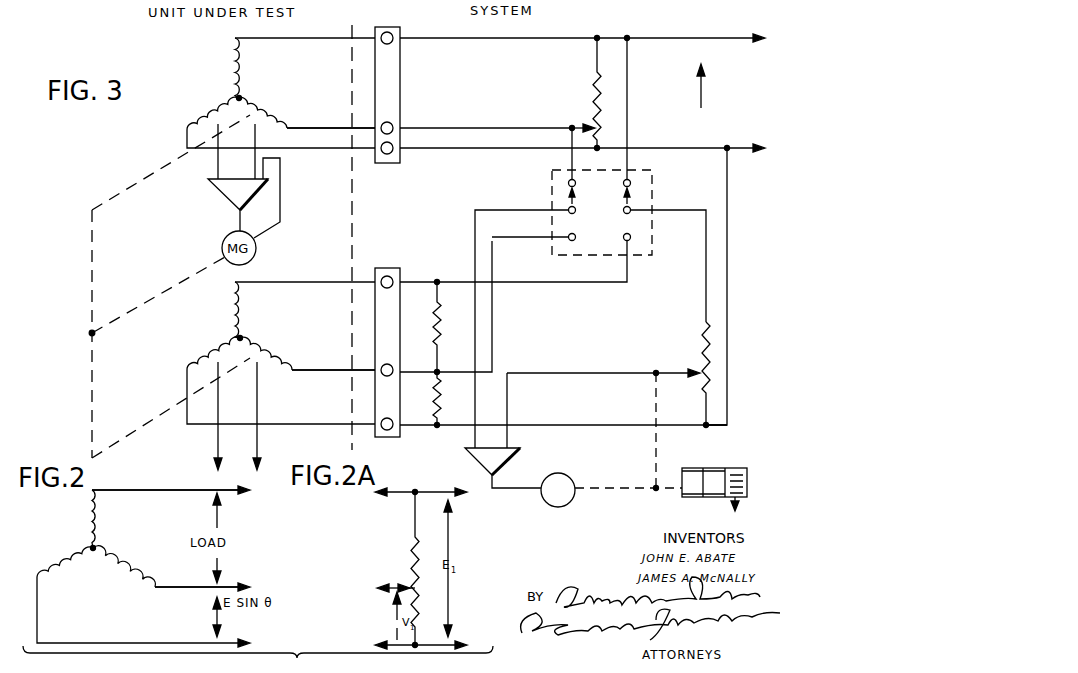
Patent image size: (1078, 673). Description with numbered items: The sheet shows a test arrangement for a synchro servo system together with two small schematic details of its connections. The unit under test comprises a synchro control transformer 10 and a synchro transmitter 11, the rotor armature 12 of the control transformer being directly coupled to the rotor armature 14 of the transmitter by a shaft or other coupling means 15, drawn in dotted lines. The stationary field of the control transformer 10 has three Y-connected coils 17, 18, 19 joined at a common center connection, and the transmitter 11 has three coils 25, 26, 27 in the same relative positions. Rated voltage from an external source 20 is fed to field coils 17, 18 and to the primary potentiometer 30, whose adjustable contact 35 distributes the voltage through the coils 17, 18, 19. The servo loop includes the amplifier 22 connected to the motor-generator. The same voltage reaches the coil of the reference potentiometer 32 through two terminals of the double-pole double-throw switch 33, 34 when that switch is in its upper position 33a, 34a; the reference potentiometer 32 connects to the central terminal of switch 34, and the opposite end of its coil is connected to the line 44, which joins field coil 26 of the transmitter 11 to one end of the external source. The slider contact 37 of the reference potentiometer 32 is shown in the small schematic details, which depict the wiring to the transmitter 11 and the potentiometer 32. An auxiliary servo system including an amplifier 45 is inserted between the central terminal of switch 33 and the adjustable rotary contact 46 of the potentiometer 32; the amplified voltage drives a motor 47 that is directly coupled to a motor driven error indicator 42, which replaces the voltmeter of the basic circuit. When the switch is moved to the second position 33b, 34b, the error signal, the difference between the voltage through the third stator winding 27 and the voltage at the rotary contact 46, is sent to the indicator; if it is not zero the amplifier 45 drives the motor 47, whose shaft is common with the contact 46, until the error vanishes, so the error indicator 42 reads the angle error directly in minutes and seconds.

In FIG. 3, the synchro control transformer 10 is at (248, 93).
In FIG. 3, the synchro transmitter 11 is at (249, 336).
In FIG. 2, the synchro transmitter 11 is at (103, 542).
In FIG. 3, the rotor armature of the control transformer 12 is at (252, 118).
In FIG. 3, the rotor armature of the synchro transmitter 14 is at (253, 364).
In FIG. 3, the coupling means 15 is at (93, 272).
In FIG. 3, the field coil 17 is at (229, 63).
In FIG. 3, the field coil 18 is at (218, 107).
In FIG. 3, the field coil 19 is at (265, 108).
In FIG. 3, the external source 20 is at (701, 104).
In FIG. 3, the amplifier 22 is at (223, 195).
In FIG. 3, the field coil of the synchro transmitter 25 is at (238, 303).
In FIG. 2, the field coil of the synchro transmitter 25 is at (86, 514).
In FIG. 3, the field coil of the synchro transmitter 26 is at (209, 347).
In FIG. 2, the field coil of the synchro transmitter 26 is at (73, 555).
In FIG. 3, the third stator winding of the synchro transmitter 27 is at (283, 353).
In FIG. 2, the third stator winding of the synchro transmitter 27 is at (134, 564).
In FIG. 3, the primary potentiometer 30 is at (587, 84).
In FIG. 3, the reference potentiometer 32 is at (712, 336).
In FIG. 2A, the reference potentiometer 32 is at (405, 548).
In FIG. 3, the switch 33 is at (556, 208).
In FIG. 3, the switch position 33a is at (568, 184).
In FIG. 3, the second switch position 33b is at (569, 240).
In FIG. 3, the switch 34 is at (639, 207).
In FIG. 3, the switch position 34a is at (634, 182).
In FIG. 3, the second switch position 34b is at (624, 242).
In FIG. 3, the potentiometer tap 35 is at (580, 122).
In FIG. 2, the slider contact 37 is at (232, 492).
In FIG. 2A, the slider contact 37 is at (395, 494).
In FIG. 3, the error indicator 42 is at (747, 478).
In FIG. 3, the line 44 is at (712, 429).
In FIG. 3, the amplifier 45 is at (519, 455).
In FIG. 3, the adjustable rotary contact 46 is at (690, 370).
In FIG. 3, the motor 47 is at (572, 476).